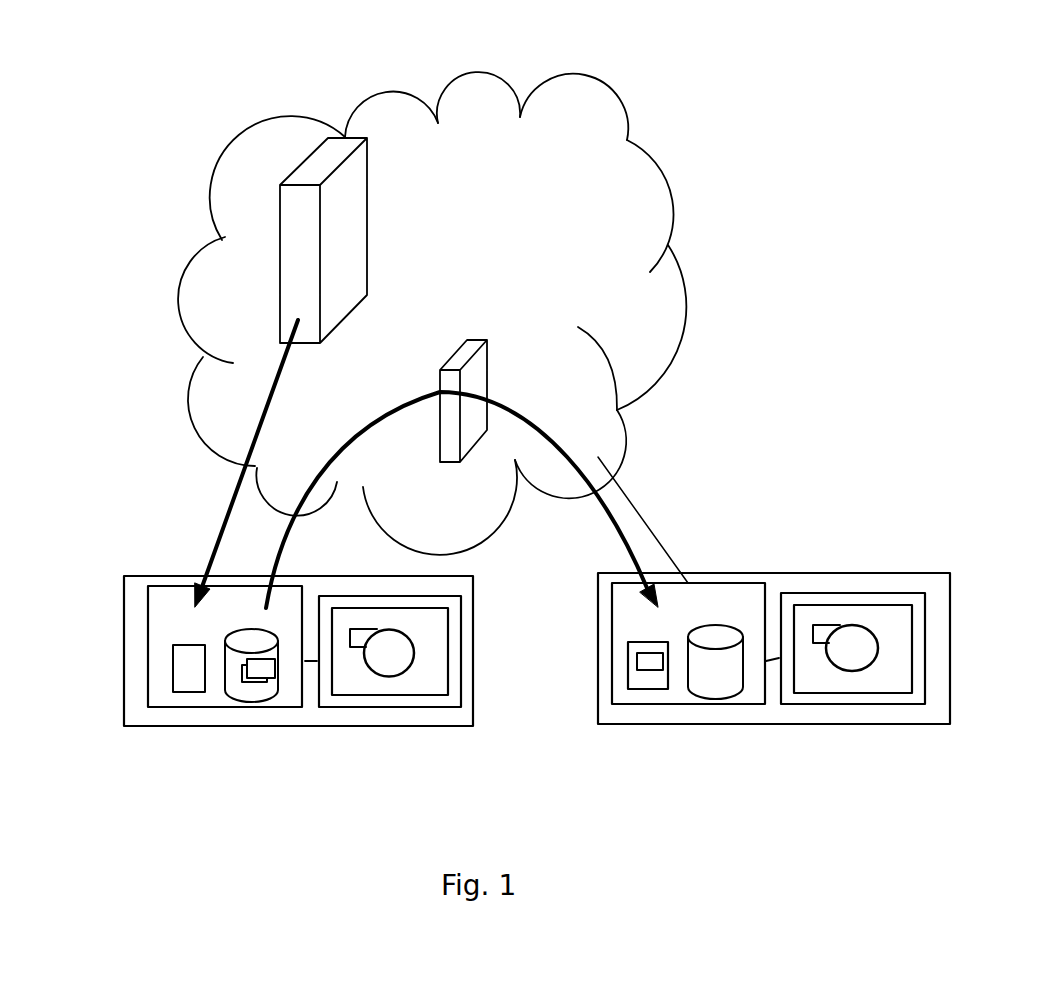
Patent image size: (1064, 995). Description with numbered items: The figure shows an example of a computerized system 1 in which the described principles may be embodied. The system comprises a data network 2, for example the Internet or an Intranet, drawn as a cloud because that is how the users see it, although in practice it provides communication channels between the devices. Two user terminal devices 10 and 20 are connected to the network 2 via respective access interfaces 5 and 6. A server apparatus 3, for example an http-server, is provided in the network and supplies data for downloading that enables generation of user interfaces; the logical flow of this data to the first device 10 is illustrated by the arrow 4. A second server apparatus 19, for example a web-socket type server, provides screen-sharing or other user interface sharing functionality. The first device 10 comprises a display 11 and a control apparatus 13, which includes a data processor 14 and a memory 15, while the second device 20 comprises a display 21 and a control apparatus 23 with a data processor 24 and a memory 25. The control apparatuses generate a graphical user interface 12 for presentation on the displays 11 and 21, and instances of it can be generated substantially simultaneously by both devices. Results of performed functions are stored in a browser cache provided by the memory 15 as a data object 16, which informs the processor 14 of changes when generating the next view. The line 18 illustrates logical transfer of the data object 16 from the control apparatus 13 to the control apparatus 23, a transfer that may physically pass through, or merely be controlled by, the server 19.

The computerized system 1 is at (256, 92).
The data network 2 is at (238, 220).
The server apparatus 3 is at (302, 172).
The arrow 4 is at (252, 468).
The access interface 5 is at (250, 530).
The access interface 6 is at (632, 497).
The line 18 is at (630, 547).
The server apparatus 19 is at (476, 383).
The user terminal device 10 is at (135, 605).
The control apparatus 13 is at (160, 683).
The data processor 14 is at (185, 672).
The memory 15 is at (231, 680).
The data object 16 is at (262, 687).
The display 11 is at (358, 700).
The graphical user interface 12 is at (410, 678).
The user terminal device 20 is at (940, 659).
The control apparatus 23 is at (623, 694).
The data processor 24 is at (652, 680).
The memory 25 is at (727, 680).
The display 21 is at (836, 695).